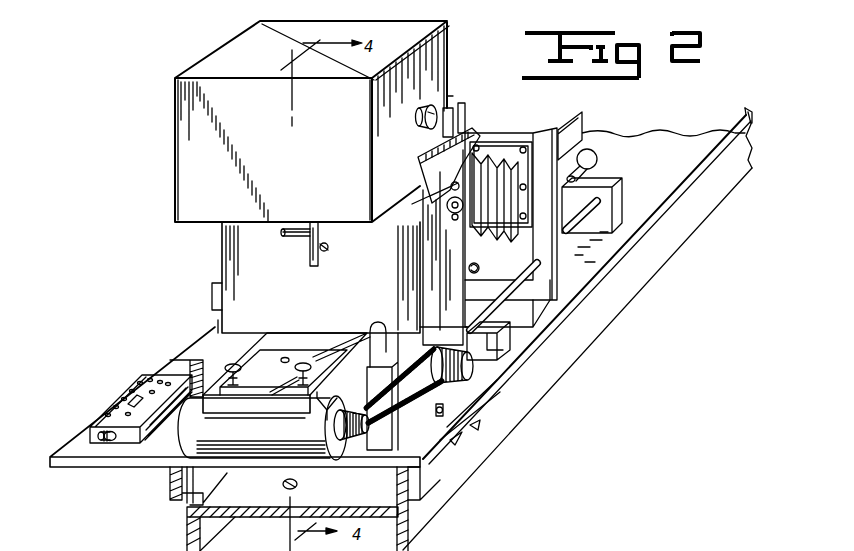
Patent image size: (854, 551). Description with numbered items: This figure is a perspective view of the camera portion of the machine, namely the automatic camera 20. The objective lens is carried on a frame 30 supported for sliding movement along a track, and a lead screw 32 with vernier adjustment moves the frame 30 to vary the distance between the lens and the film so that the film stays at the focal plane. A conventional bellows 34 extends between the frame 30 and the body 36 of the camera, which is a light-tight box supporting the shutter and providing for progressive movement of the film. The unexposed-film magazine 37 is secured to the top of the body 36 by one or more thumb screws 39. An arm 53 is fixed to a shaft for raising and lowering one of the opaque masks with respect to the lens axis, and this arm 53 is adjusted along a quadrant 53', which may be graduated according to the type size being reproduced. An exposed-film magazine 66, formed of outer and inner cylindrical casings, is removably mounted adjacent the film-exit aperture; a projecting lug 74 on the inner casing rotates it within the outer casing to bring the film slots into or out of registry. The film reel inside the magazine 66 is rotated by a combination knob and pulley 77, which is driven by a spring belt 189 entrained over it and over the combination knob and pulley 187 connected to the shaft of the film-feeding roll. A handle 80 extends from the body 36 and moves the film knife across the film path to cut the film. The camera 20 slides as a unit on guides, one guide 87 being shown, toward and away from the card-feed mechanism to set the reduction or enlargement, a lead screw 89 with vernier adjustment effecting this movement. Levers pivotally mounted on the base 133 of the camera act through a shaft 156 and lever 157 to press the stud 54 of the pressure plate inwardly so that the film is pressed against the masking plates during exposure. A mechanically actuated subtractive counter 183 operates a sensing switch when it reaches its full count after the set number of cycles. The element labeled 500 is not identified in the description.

The unexposed-film magazine 37 is at (456, 46).
The thumb screw 39 is at (427, 104).
The arm 53 is at (435, 178).
The quadrant 53' is at (476, 114).
The support column 500 is at (443, 247).
The frame 30 is at (548, 132).
The bellows 34 is at (490, 236).
The automatic camera 20 is at (487, 166).
The lead screw 32 is at (478, 268).
The guide 87 is at (561, 342).
The base 133 is at (453, 453).
The spring belt 189 is at (436, 410).
The combination knob and pulley 187 is at (472, 370).
The combination knob and pulley 77 is at (361, 447).
The projecting lug 74 is at (330, 424).
The exposed-film magazine 66 is at (183, 462).
The handle 80 is at (377, 327).
The body 36 is at (244, 252).
The shaft 156 is at (292, 238).
The lever 157 is at (323, 237).
The stud 54 is at (327, 253).
The lead screw 89 is at (284, 485).
The subtractive counter 183 is at (85, 425).